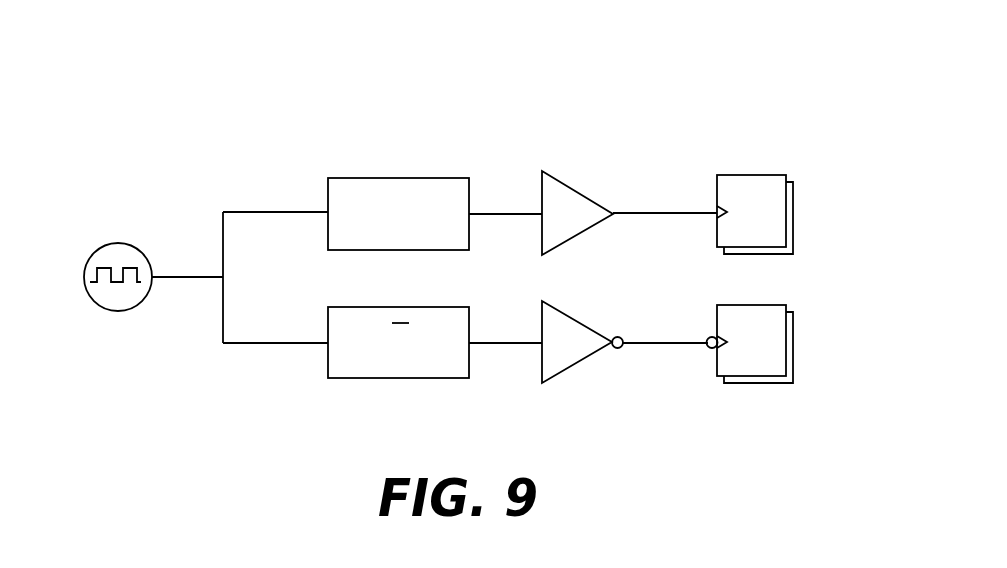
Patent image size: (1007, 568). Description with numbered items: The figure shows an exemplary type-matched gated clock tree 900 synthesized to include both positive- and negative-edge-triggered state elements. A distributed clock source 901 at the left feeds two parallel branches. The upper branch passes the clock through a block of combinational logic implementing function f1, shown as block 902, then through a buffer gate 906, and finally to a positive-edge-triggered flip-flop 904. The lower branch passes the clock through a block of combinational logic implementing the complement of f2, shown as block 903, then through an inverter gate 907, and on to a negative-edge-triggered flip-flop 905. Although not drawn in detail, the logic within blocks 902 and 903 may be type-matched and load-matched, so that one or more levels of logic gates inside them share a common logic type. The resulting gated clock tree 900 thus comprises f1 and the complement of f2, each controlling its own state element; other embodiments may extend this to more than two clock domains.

The gated clock tree 900 is at (798, 92).
The distributed clock source 901 is at (118, 244).
The combinational logic block f1 902 is at (401, 178).
The combinational logic block f2 bar 903 is at (405, 378).
The positive-edge-triggered flip-flop 904 is at (746, 175).
The negative-edge-triggered flip-flop 905 is at (752, 384).
The buffer gate 906 is at (586, 230).
The inverter gate 907 is at (580, 361).